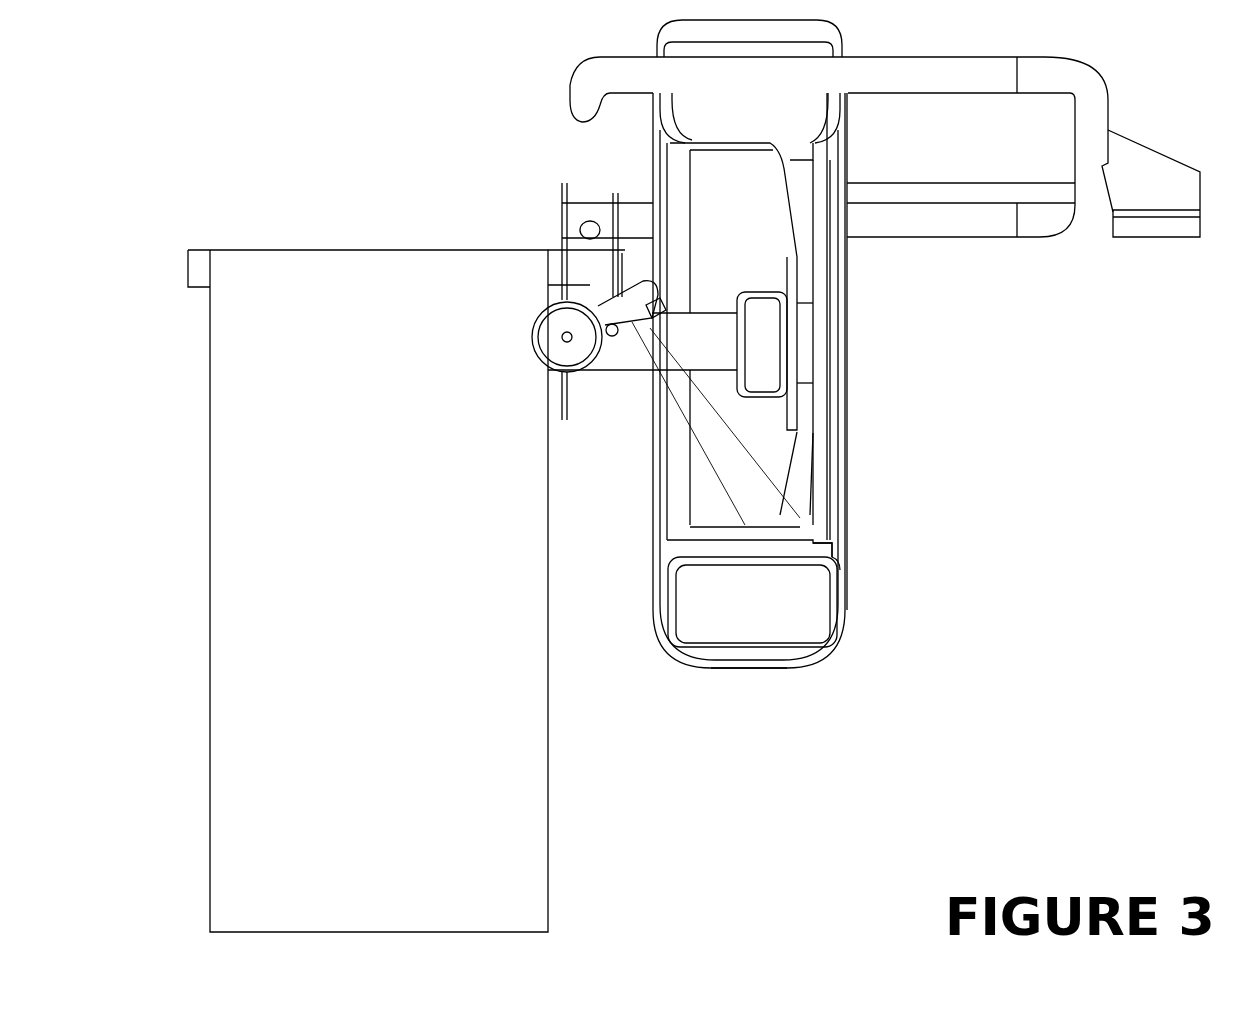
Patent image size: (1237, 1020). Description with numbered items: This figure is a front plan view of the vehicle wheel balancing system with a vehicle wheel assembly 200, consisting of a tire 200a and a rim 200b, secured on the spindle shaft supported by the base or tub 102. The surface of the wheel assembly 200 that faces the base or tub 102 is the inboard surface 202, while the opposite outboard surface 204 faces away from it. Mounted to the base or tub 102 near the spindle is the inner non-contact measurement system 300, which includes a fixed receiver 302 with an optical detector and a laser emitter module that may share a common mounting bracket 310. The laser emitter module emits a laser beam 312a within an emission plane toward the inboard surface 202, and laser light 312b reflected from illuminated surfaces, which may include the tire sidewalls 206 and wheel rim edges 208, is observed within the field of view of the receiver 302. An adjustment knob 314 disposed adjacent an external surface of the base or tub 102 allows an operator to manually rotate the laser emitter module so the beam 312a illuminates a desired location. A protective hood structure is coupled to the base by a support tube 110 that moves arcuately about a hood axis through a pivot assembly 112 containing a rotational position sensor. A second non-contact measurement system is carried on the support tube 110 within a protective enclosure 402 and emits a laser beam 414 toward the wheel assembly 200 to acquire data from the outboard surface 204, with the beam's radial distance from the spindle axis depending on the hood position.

The base or tub 102 is at (461, 593).
The support tube 110 is at (761, 128).
The pivot assembly 112 is at (550, 301).
The vehicle wheel assembly 200 is at (864, 461).
The tire 200a is at (812, 727).
The rim 200b is at (912, 518).
The inboard surface 202 is at (648, 350).
The outboard surface 204 is at (908, 350).
The tire sidewalls 206 is at (843, 643).
The wheel rim edges 208 is at (976, 599).
The non-contact measurement system 300 is at (547, 376).
The fixed receiver 302 is at (787, 328).
The mounting bracket 310 is at (544, 442).
The laser beam 312a is at (557, 478).
The reflected laser light 312b is at (593, 504).
The adjustment knob 314 is at (470, 347).
The protective enclosure 402 is at (1105, 247).
The laser beam 414 is at (961, 178).